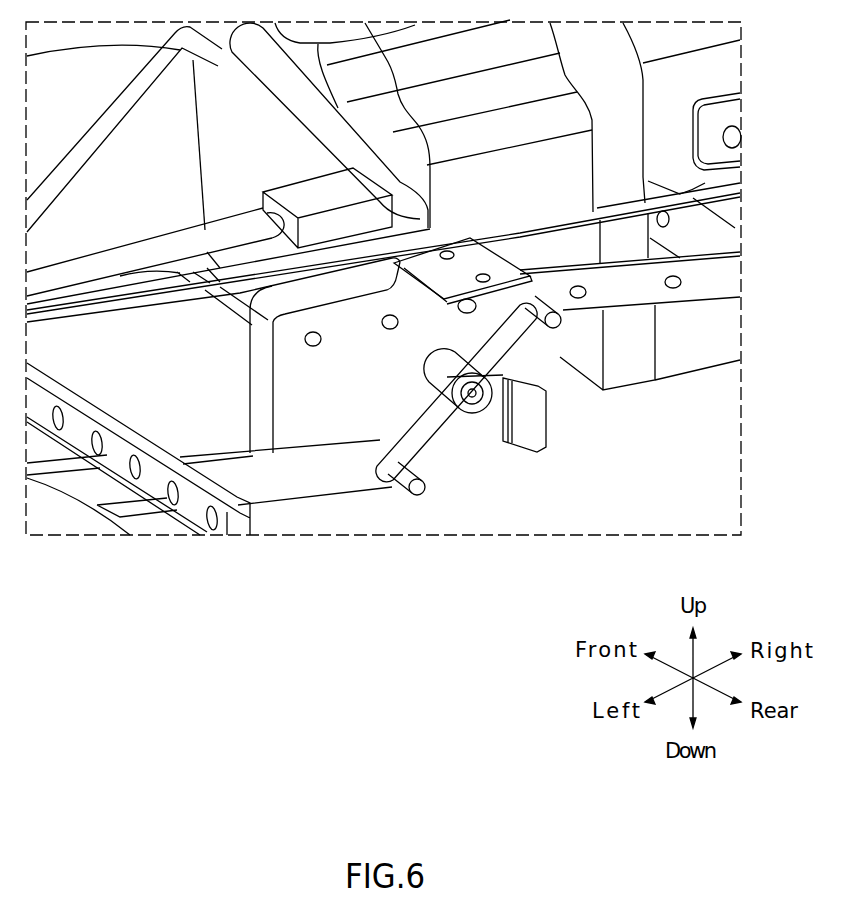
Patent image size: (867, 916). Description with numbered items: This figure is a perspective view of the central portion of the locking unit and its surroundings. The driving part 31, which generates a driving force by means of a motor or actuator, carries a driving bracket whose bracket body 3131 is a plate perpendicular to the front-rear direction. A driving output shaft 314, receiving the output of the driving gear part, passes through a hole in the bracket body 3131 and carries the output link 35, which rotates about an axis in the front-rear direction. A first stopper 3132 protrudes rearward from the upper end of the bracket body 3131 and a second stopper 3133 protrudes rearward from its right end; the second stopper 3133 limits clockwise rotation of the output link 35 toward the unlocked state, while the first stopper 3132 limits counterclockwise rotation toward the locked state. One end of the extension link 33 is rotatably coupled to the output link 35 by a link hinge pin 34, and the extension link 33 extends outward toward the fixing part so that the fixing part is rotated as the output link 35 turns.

The driving part 31 is at (287, 506).
The extension link 33 is at (353, 487).
The bracket body 3131 is at (307, 375).
The first stopper 3132 is at (505, 277).
The second stopper 3133 is at (540, 428).
The driving output shaft 314 is at (477, 393).
The link hinge pin 34 is at (430, 428).
The output link 35 is at (438, 450).